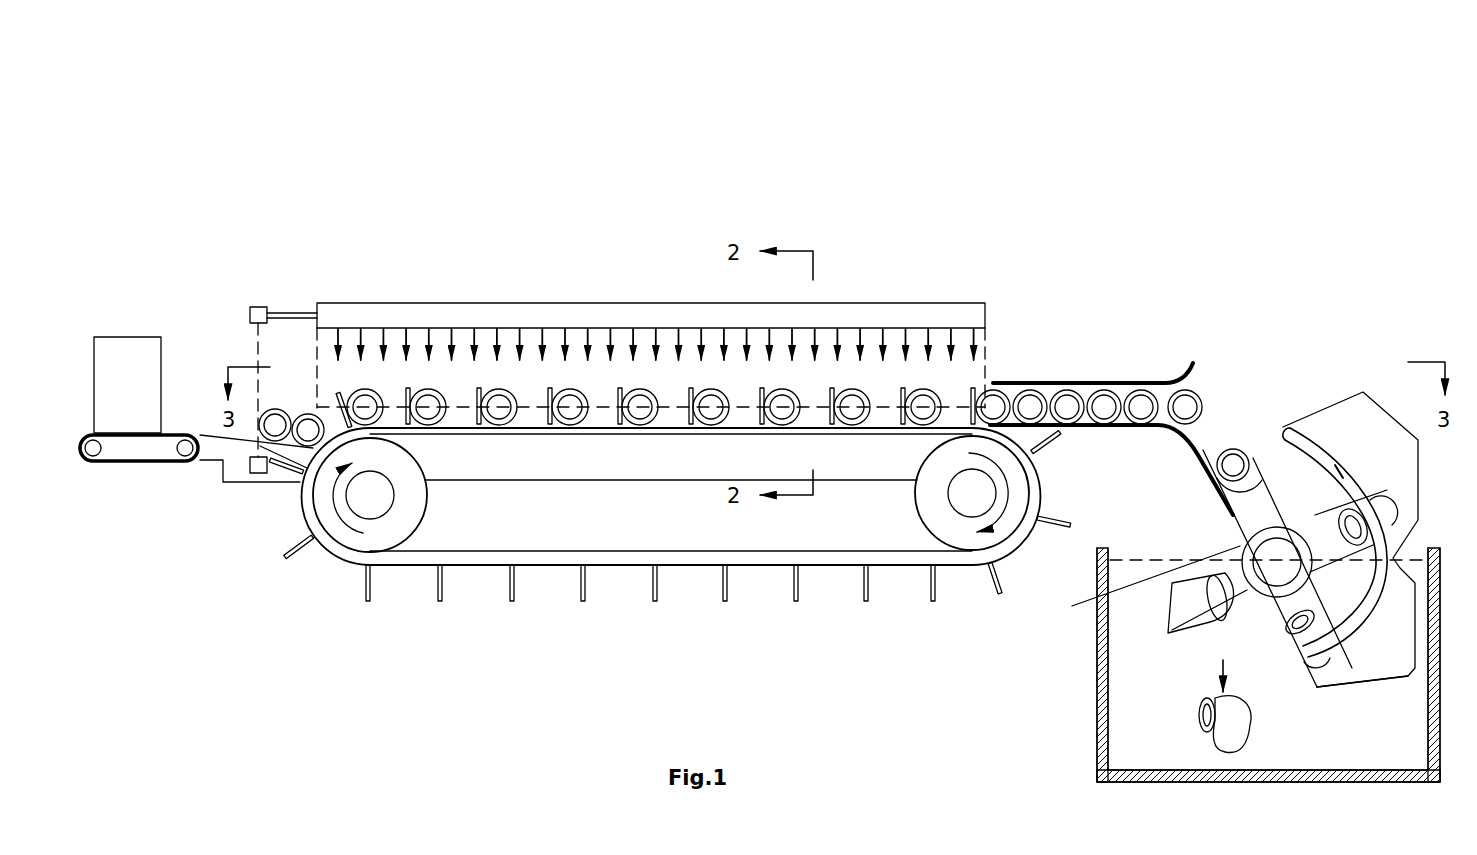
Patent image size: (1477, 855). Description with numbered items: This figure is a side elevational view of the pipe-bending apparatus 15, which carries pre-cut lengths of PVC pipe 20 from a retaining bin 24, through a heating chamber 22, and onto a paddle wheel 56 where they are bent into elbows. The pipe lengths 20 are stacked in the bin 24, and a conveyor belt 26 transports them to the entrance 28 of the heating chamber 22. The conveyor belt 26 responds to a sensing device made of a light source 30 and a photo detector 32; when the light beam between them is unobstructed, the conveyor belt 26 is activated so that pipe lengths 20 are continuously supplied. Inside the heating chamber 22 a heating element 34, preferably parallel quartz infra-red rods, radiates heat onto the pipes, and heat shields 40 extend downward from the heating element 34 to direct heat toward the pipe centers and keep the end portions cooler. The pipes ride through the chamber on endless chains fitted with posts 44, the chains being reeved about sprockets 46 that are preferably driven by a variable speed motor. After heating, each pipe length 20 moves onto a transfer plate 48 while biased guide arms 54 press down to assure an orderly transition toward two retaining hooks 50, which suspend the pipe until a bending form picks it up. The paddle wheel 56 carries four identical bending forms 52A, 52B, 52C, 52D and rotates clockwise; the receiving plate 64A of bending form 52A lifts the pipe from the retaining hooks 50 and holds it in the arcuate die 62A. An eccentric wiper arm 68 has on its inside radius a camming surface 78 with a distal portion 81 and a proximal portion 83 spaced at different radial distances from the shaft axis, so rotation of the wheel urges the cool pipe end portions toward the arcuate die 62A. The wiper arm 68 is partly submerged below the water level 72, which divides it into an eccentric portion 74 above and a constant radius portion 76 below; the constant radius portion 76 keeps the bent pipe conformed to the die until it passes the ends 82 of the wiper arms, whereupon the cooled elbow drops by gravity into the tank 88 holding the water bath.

The apparatus 15 is at (979, 242).
The lengths of PVC pipe 20 is at (274, 407).
The heating chamber 22 is at (967, 375).
The retaining bin 24 is at (128, 358).
The conveyor belt 26 is at (135, 464).
The entrance 28 is at (299, 388).
The light source 30 is at (250, 318).
The photo detector 32 is at (257, 471).
The heating element 34 is at (611, 302).
The heat shields 40 is at (320, 343).
The posts 44 is at (287, 478).
The sprockets 46 is at (387, 530).
The transfer plate 48 is at (1090, 431).
The retaining hooks 50 is at (1232, 483).
The bending form 52A is at (1232, 566).
The bending form 52B is at (1346, 574).
The bending form 52C is at (1271, 627).
The bending form 52D is at (1168, 611).
The guide arms 54 is at (1120, 383).
The paddle wheel 56 is at (1295, 527).
The arcuate die 62A is at (1227, 524).
The receiving plate 64A is at (1205, 455).
The eccentric wiper arm 68 is at (1281, 414).
The water level 72 is at (1213, 560).
The eccentric portion 74 is at (1368, 539).
The constant radius portion 76 is at (1364, 689).
The camming surface 78 is at (1338, 473).
The distal portion 81 is at (1268, 440).
The ends 82 is at (1307, 674).
The proximal portion 83 is at (1380, 573).
The tank 88 is at (1100, 735).